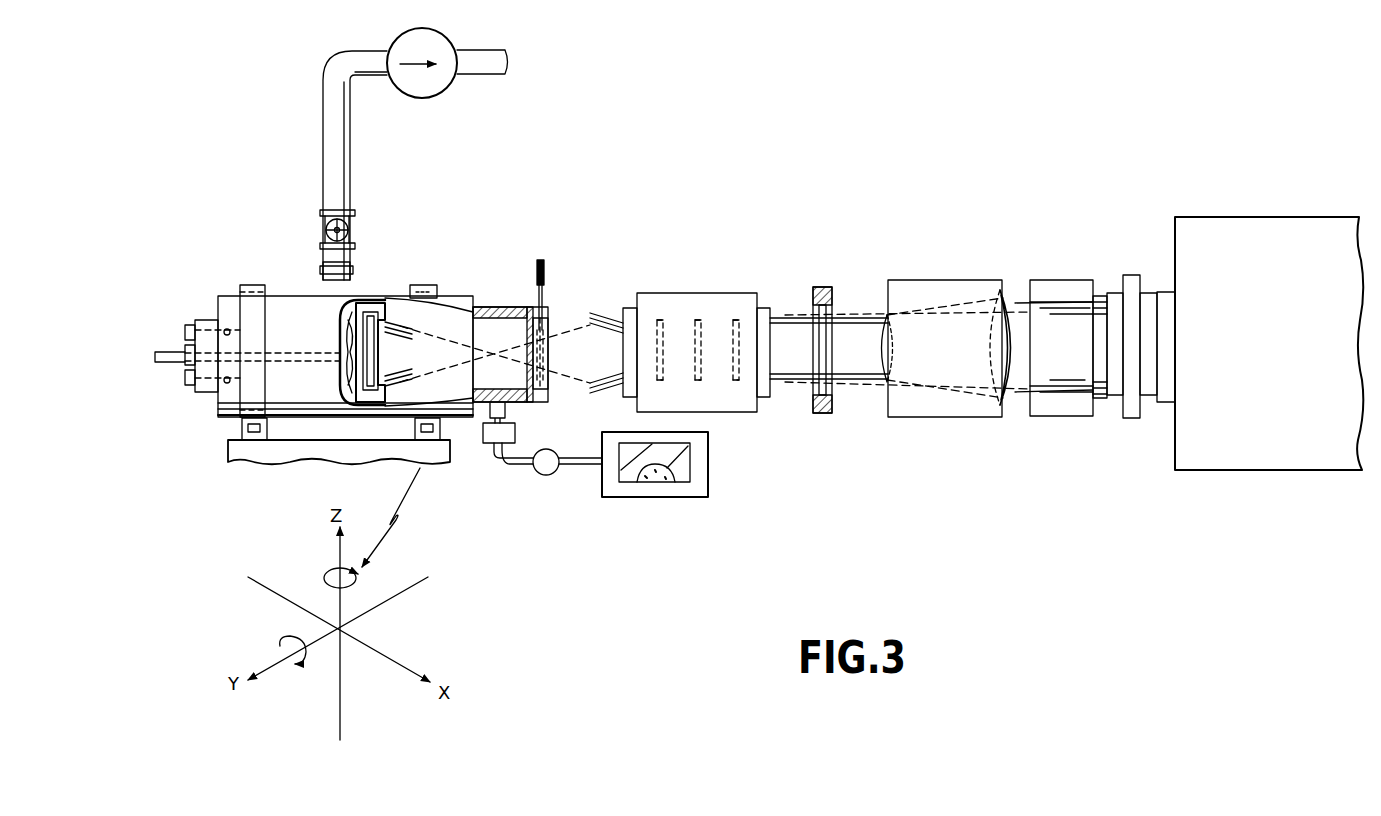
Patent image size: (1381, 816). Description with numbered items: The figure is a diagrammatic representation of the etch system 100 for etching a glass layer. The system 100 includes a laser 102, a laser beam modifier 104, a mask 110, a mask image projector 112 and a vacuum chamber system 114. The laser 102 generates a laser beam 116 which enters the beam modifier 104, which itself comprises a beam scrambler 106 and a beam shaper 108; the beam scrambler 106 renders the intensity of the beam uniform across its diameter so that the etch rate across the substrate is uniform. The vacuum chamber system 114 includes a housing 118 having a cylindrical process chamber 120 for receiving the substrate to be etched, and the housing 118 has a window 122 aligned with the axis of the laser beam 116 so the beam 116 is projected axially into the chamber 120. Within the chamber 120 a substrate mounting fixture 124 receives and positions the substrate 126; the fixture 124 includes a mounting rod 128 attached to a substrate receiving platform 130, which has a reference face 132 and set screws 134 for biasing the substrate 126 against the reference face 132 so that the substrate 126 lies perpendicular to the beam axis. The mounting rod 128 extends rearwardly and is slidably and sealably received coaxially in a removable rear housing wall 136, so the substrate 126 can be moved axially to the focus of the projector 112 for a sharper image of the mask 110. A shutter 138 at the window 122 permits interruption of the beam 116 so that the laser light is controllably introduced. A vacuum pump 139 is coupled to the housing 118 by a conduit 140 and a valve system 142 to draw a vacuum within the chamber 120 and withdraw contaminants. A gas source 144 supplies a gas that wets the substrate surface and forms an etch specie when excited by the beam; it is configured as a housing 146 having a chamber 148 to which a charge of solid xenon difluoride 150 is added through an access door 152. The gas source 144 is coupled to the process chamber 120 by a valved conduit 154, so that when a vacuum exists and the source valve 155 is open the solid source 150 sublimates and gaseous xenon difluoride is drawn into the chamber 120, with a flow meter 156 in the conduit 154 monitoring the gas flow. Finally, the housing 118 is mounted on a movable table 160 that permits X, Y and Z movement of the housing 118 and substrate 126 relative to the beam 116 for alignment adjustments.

The etch system 100 is at (917, 447).
The laser 102 is at (1270, 368).
The laser beam modifier 104 is at (988, 312).
The beam scrambler 106 is at (1061, 330).
The beam shaper 108 is at (960, 285).
The mask 110 is at (822, 287).
The mask image projector 112 is at (672, 300).
The vacuum chamber system 114 is at (378, 351).
The laser beam 116 is at (1103, 392).
The housing 118 is at (463, 418).
The cylindrical process chamber 120 is at (436, 365).
The window 122 is at (547, 317).
The substrate mounting fixture 124 is at (365, 405).
The substrate 126 is at (345, 428).
The mounting rod 128 is at (172, 350).
The substrate receiving platform 130 is at (345, 330).
The reference face 132 is at (403, 284).
The set screws 134 is at (362, 300).
The removable rear housing wall 136 is at (213, 393).
The shutter 138 is at (542, 262).
The vacuum pump 139 is at (445, 85).
The conduit 140 is at (350, 172).
The valve system 142 is at (320, 230).
The gas source 144 is at (664, 480).
The housing 146 is at (603, 480).
The chamber 148 is at (688, 447).
The solid XeF2 charge 150 is at (670, 477).
The access door 152 is at (710, 458).
The valved conduit 154 is at (510, 466).
The source valve 155 is at (553, 450).
The flow meter 156 is at (517, 428).
The movable table 160 is at (277, 455).